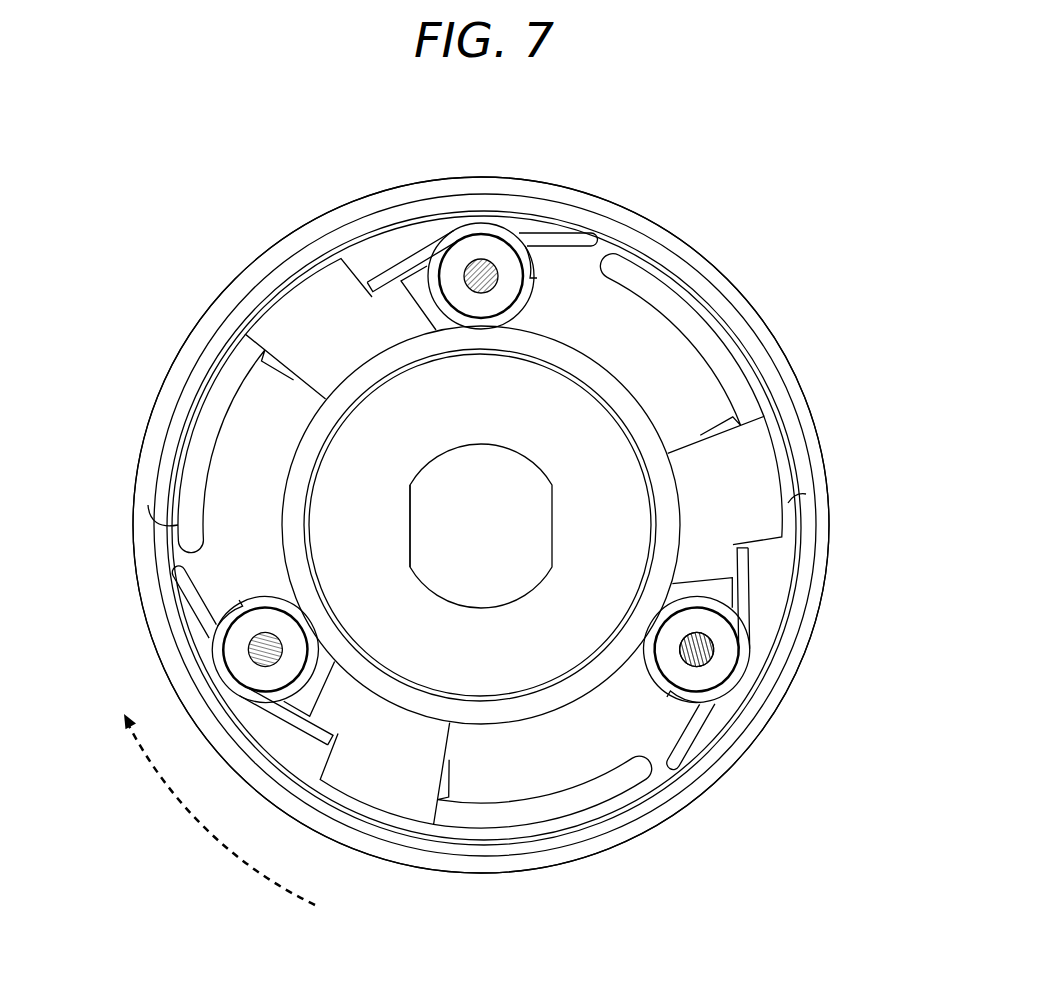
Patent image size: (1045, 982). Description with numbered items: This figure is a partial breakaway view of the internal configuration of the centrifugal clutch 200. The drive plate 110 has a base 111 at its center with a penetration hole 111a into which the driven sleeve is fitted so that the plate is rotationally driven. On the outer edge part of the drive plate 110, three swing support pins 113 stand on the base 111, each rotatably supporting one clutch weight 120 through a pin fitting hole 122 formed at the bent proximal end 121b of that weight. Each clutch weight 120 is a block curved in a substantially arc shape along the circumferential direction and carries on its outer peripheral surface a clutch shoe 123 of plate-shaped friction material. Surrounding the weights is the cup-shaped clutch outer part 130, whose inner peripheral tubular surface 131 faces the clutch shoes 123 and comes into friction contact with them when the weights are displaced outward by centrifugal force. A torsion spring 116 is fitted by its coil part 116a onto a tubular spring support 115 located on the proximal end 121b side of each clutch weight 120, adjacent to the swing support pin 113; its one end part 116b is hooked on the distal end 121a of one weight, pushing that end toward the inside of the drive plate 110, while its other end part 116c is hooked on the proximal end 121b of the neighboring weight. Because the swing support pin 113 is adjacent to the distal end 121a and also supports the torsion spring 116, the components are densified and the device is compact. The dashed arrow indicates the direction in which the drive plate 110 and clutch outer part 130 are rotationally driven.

The centrifugal clutch 200 is at (210, 222).
The drive plate 110 is at (168, 592).
The base 111 is at (375, 536).
The penetration hole 111a is at (412, 498).
The swing support pin 113 is at (503, 271).
The spring support 115 is at (537, 252).
The torsion spring 116 is at (560, 497).
The coil part 116a is at (738, 691).
The one end part of torsion spring 116b is at (750, 567).
The other end part of torsion spring 116c is at (700, 748).
The clutch weight 120 is at (610, 388).
The distal end 121a is at (600, 243).
The proximal end 121b is at (432, 326).
The pin fitting hole 122 is at (690, 646).
The clutch shoe 123 is at (790, 503).
The clutch outer part 130 is at (673, 240).
The tubular surface 131 is at (162, 518).